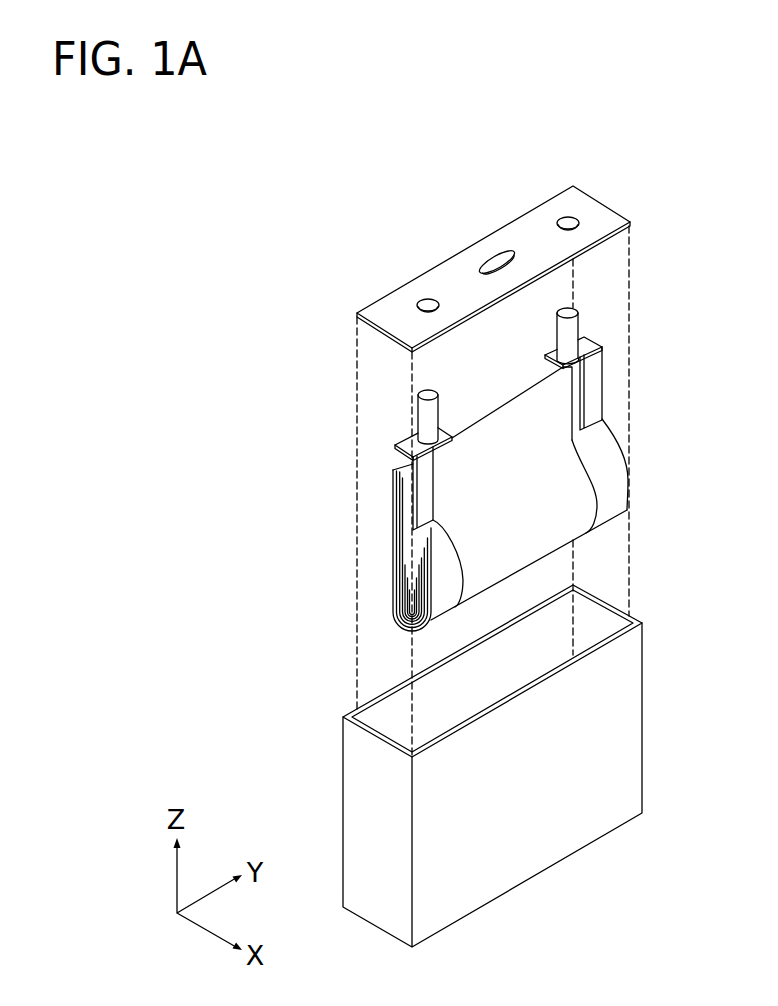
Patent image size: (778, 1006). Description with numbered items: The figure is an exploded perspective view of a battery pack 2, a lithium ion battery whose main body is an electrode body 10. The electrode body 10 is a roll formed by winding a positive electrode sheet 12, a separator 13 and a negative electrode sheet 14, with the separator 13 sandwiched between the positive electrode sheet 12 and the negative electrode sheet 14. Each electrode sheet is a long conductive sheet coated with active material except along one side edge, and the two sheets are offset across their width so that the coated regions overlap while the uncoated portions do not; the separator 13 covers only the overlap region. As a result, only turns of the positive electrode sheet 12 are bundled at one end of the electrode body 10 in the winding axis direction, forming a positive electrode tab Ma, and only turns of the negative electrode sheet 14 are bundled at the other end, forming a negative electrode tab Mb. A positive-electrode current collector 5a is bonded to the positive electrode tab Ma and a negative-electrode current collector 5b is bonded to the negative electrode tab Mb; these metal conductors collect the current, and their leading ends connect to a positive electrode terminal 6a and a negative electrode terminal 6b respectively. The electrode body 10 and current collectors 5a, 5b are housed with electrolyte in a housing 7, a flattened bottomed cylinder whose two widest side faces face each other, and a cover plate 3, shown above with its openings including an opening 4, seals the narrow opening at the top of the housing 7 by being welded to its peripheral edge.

The battery pack 2 is at (367, 277).
The cover plate 3 is at (605, 213).
The hole (liquid injection / safety valve opening) 4 is at (493, 261).
The positive-electrode current collector 5a is at (598, 360).
The negative-electrode current collector 5b is at (420, 460).
The positive electrode terminal 6a is at (565, 333).
The negative electrode terminal 6b is at (430, 418).
The housing 7 is at (625, 728).
The electrode body 10 is at (698, 478).
The positive electrode sheet 12 is at (613, 497).
The separator 13 is at (570, 538).
The negative electrode sheet 14 is at (443, 593).
The positive electrode tab Ma is at (612, 447).
The negative electrode tab Mb is at (438, 556).